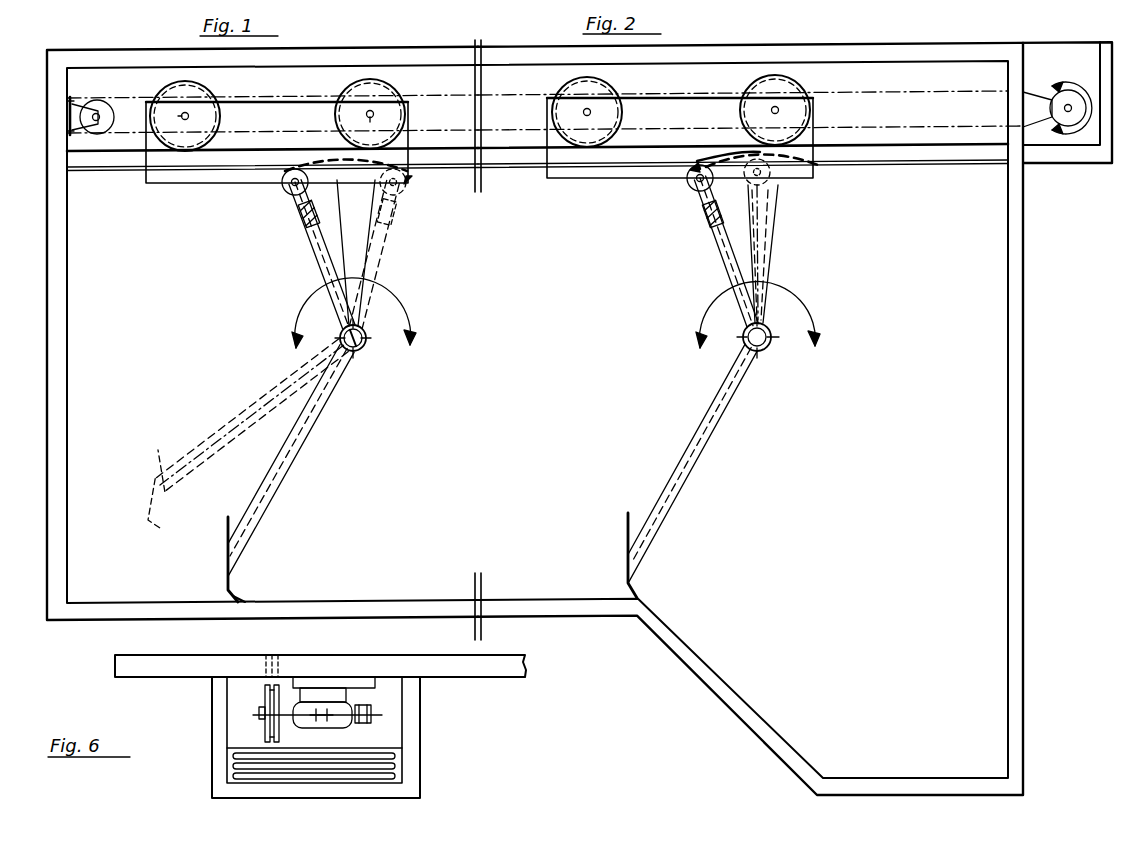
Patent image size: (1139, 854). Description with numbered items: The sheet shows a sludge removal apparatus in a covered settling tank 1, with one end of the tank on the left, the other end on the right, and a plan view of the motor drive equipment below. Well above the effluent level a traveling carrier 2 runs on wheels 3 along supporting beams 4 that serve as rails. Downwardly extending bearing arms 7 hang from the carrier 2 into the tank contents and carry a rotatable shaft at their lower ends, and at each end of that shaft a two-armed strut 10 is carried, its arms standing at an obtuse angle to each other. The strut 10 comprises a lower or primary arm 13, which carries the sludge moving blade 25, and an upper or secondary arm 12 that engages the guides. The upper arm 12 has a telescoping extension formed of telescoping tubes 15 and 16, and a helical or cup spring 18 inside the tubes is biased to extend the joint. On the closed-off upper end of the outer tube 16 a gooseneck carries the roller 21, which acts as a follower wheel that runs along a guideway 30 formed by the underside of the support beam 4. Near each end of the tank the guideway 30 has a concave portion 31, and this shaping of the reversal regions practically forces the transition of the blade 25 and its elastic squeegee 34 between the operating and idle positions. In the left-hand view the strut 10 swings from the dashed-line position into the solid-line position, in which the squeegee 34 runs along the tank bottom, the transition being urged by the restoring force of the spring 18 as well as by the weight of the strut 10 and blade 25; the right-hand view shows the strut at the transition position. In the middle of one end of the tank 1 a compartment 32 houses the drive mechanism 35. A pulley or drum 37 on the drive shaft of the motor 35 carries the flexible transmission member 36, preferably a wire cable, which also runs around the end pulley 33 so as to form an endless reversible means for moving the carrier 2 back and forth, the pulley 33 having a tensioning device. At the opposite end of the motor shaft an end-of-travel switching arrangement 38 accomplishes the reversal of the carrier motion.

In FIG. 1, the settling tank 1 is at (114, 384).
In FIG. 2, the settling tank 1 is at (921, 377).
In FIG. 1, the traveling carrier 2 is at (210, 175).
In FIG. 2, the traveling carrier 2 is at (584, 173).
In FIG. 1, the wheels 3 is at (405, 110).
In FIG. 1, the supporting beams 4 is at (110, 168).
In FIG. 1, the bearing arms 7 is at (360, 258).
In FIG. 1, the two-armed strut 10 is at (364, 352).
In FIG. 2, the two-armed strut 10 is at (762, 356).
In FIG. 1, the upper arm 12 is at (308, 281).
In FIG. 1, the lower arm 13 is at (290, 465).
In FIG. 1, the telescoping tube 15 is at (322, 302).
In FIG. 1, the outer tube 16 is at (290, 188).
In FIG. 1, the spring 18 is at (298, 222).
In FIG. 2, the spring 18 is at (702, 230).
In FIG. 1, the roller 21 is at (410, 175).
In FIG. 2, the roller 21 is at (694, 182).
In FIG. 1, the sludge moving blade 25 is at (226, 562).
In FIG. 2, the sludge moving blade 25 is at (626, 557).
In FIG. 2, the guideway 30 is at (524, 168).
In FIG. 1, the concave portion 31 is at (392, 192).
In FIG. 2, the concave portion 31 is at (783, 178).
In FIG. 2, the compartment 32 is at (1060, 66).
In FIG. 6, the compartment 32 is at (236, 722).
In FIG. 1, the end pulley 33 is at (104, 106).
In FIG. 1, the elastic squeegee 34 is at (240, 600).
In FIG. 6, the drive mechanism 35 is at (342, 690).
In FIG. 1, the flexible transmission member 36 is at (430, 97).
In FIG. 6, the flexible transmission member 36 is at (272, 655).
In FIG. 2, the pulley 37 is at (1065, 124).
In FIG. 6, the pulley 37 is at (258, 690).
In FIG. 6, the end-of-travel switching arrangement 38 is at (366, 705).